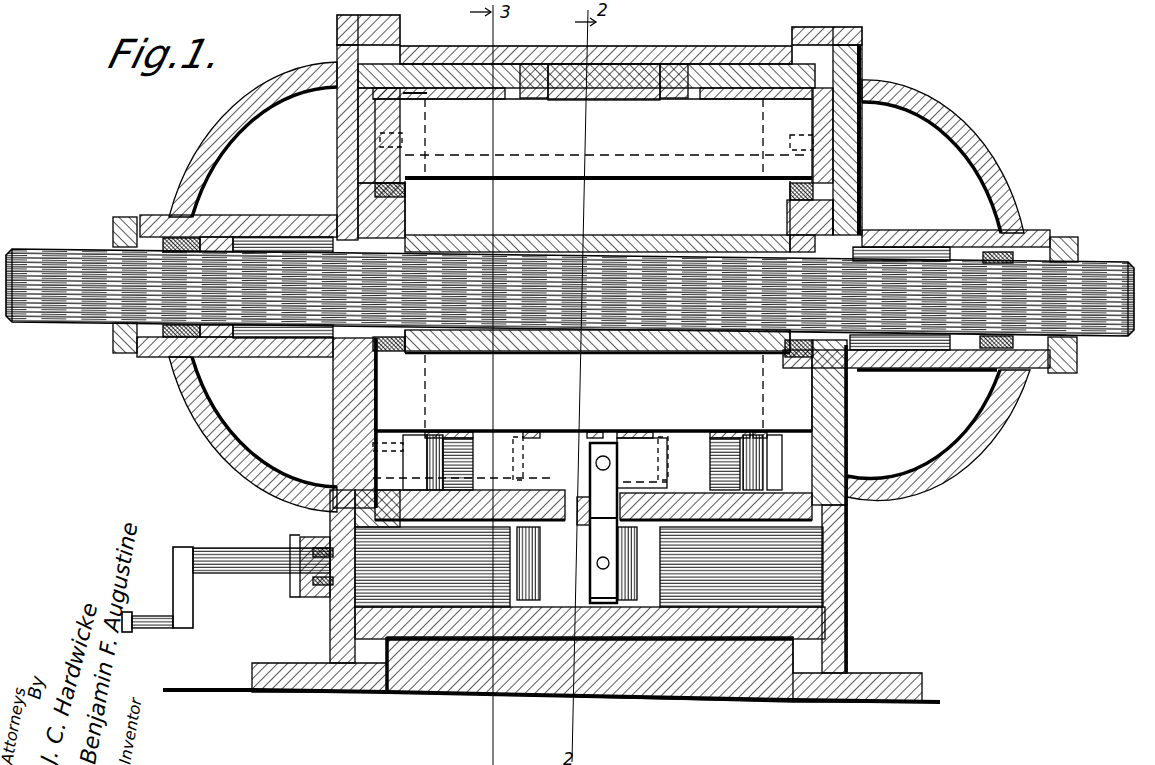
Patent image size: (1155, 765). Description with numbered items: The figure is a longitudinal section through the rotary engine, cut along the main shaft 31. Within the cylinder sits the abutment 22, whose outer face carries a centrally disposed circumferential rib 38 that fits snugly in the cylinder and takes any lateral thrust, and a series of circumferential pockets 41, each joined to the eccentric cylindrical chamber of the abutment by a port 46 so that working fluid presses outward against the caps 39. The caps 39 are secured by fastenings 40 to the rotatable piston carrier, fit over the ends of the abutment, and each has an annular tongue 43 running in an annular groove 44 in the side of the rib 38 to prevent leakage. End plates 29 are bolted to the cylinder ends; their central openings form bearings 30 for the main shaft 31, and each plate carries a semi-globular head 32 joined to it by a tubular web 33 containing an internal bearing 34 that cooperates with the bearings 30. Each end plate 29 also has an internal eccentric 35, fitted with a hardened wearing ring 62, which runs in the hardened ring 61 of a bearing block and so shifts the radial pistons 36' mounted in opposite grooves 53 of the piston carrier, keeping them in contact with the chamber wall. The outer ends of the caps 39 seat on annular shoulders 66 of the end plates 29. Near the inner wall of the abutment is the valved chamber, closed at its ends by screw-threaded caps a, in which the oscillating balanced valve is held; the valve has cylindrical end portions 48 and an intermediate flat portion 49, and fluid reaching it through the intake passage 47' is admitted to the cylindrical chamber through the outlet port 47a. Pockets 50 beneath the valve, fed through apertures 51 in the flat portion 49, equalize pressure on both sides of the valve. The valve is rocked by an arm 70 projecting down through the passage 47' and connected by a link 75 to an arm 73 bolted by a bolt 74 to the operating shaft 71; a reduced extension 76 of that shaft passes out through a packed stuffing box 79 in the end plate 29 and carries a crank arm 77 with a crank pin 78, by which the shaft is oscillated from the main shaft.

The abutment 22 is at (697, 80).
The end plates 29 is at (337, 32).
The bearings 30 is at (834, 256).
The main shaft 31 is at (54, 262).
The semi-globular projection or head 32 is at (212, 440).
The tubular webs 33 is at (278, 357).
The internal bearing 34 is at (217, 330).
The internal eccentric 35 is at (405, 210).
The radial pistons 36' is at (594, 265).
The circumferential rib 38 is at (600, 85).
The caps 39 is at (453, 63).
The fastenings 40 is at (337, 137).
The pockets 41 is at (530, 126).
The annular tongue 43 is at (544, 70).
The annular groove 44 is at (568, 98).
The port 46 is at (475, 100).
The outlet port 47a is at (580, 432).
The intake passage 47' is at (589, 559).
The cylindrical end portions 48 is at (718, 445).
The intermediate flat portion 49 is at (640, 445).
The pockets 50 is at (525, 488).
The apertures 51 is at (520, 440).
The grooves 53 is at (495, 362).
The hardened ring 61 is at (593, 250).
The hardened annular wearing ring 62 is at (798, 187).
The annular shoulders 66 is at (358, 186).
The arm 70 is at (603, 523).
The operating shaft 71 is at (551, 654).
The upwardly extending arm 73 is at (603, 544).
The bolt 74 is at (603, 584).
The link 75 is at (582, 525).
The reduced extension 76 is at (252, 560).
The crank arm 77 is at (193, 600).
The crank pin 78 is at (152, 628).
The stuffing box 79 is at (318, 596).
The caps a is at (436, 440).